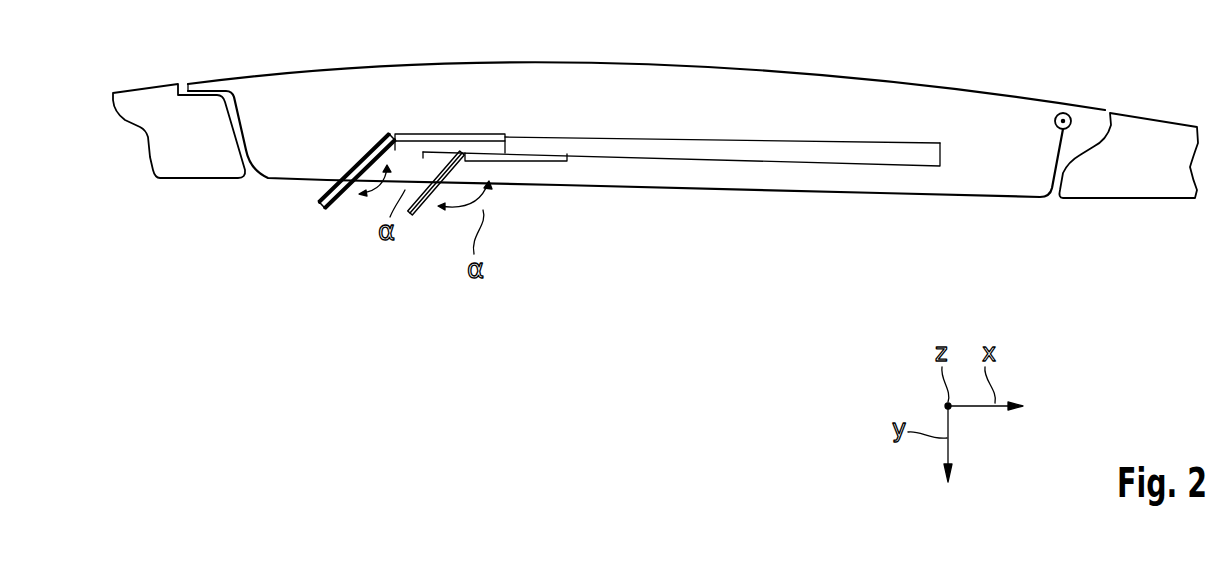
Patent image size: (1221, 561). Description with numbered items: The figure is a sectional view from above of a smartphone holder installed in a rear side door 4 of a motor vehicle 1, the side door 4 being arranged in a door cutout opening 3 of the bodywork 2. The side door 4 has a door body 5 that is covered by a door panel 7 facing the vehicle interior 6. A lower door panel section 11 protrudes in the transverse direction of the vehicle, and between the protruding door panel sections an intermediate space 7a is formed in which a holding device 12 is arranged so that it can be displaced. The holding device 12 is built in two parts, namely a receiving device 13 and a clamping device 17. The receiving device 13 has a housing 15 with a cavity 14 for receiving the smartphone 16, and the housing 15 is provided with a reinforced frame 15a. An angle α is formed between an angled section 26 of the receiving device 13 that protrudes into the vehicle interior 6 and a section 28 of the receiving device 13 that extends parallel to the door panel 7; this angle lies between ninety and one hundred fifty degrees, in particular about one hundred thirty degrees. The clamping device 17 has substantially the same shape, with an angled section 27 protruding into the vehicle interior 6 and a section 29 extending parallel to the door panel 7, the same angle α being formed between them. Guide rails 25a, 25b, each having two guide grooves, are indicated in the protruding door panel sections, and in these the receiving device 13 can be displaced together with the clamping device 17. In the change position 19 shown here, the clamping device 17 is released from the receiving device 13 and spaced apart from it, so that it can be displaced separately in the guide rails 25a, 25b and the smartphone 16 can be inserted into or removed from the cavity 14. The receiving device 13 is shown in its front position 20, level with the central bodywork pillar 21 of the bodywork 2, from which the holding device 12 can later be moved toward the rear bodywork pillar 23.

The motor vehicle 1 is at (1128, 146).
The bodywork 2 is at (1128, 146).
The door cutout opening 3 is at (1128, 146).
The side door 4 is at (646, 57).
The door body 5 is at (822, 62).
The vehicle interior 6 is at (731, 364).
The door panel 7 is at (629, 171).
The intermediate space 7a is at (629, 171).
The lower door panel section 11 is at (823, 192).
The holding device 12 is at (306, 167).
The receiving device 13 is at (443, 81).
The cavity 14 is at (345, 212).
The housing 15 is at (215, 208).
The reinforced frame 15a is at (215, 208).
The smartphone 16 is at (354, 209).
The clamping device 17 is at (464, 238).
The change position 19 is at (424, 238).
The front position 20 is at (215, 208).
The central bodywork pillar 21 is at (157, 100).
The rear bodywork pillar 23 is at (1108, 112).
The guide rail 25a is at (660, 162).
The guide rail 25b is at (657, 141).
The angled section 26 is at (215, 208).
The angled section 27 is at (420, 215).
The section extending parallel to the door panel 28 is at (407, 133).
The section extending parallel to the door panel 29 is at (535, 165).